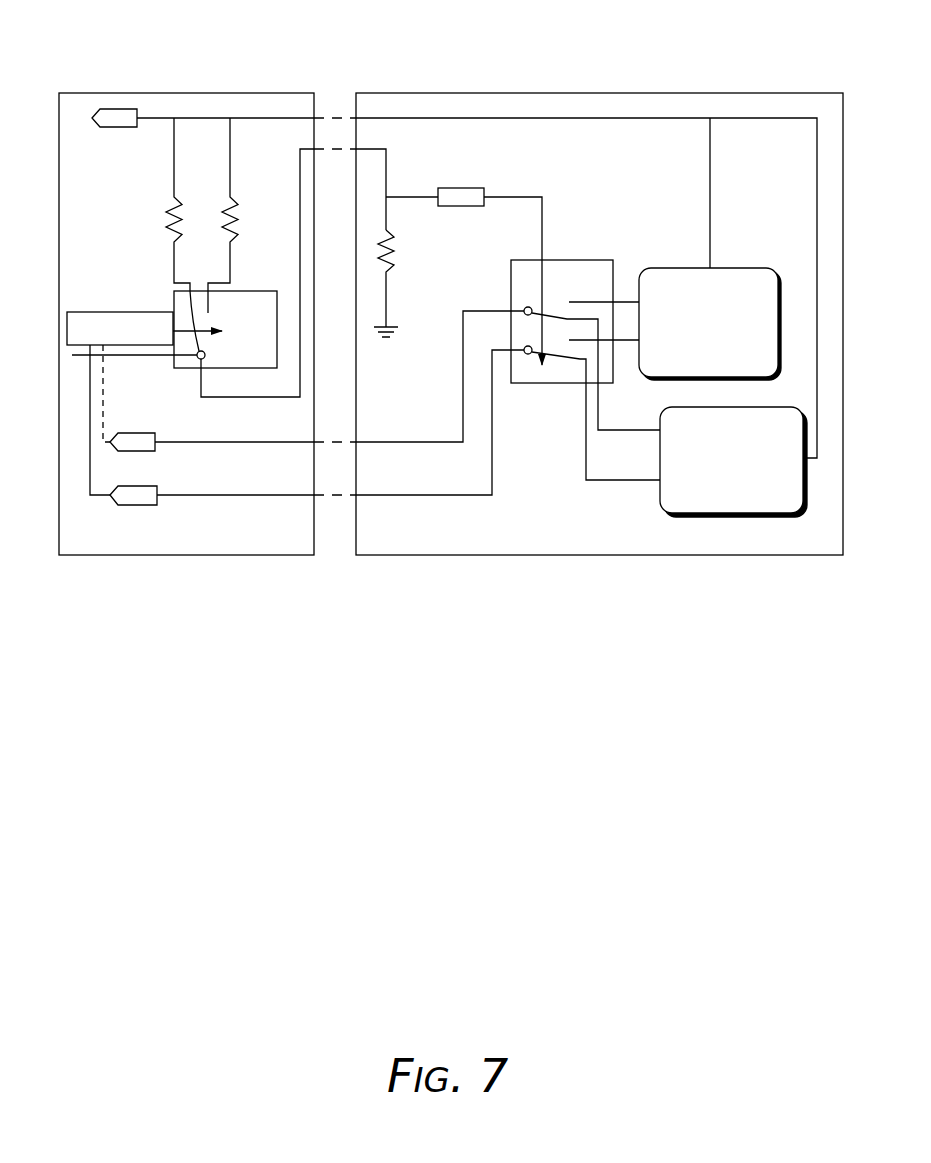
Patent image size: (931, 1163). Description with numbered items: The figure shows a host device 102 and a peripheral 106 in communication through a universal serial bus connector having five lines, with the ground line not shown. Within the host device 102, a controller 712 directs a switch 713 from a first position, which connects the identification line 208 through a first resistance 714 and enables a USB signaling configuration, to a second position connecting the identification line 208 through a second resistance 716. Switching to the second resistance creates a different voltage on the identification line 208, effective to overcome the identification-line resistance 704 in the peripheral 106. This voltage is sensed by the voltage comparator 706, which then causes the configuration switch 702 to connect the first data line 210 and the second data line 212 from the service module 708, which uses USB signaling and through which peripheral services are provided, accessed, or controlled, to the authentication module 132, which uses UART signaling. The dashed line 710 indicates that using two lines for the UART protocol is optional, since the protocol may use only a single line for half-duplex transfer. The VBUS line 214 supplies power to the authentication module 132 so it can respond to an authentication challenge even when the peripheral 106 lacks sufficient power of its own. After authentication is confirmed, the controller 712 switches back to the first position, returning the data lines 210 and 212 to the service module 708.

The host device 102 is at (132, 93).
The peripheral 106 is at (758, 93).
The power line (VBUS) 214 is at (242, 112).
The first resistance R1 714 is at (150, 205).
The second resistance R2 716 is at (250, 200).
The switch 713 is at (260, 291).
The controller 712 is at (142, 312).
The dashed line 710 is at (112, 406).
The identification line (ID) 208 is at (272, 405).
The first data line (D+/−) 210 is at (190, 448).
The second data line (D+/−) 212 is at (190, 503).
The identification-line resistance 704 is at (402, 263).
The voltage comparator 706 is at (503, 158).
The configuration switch 702 is at (578, 260).
The authentication module 132 is at (710, 324).
The service module 708 is at (733, 462).